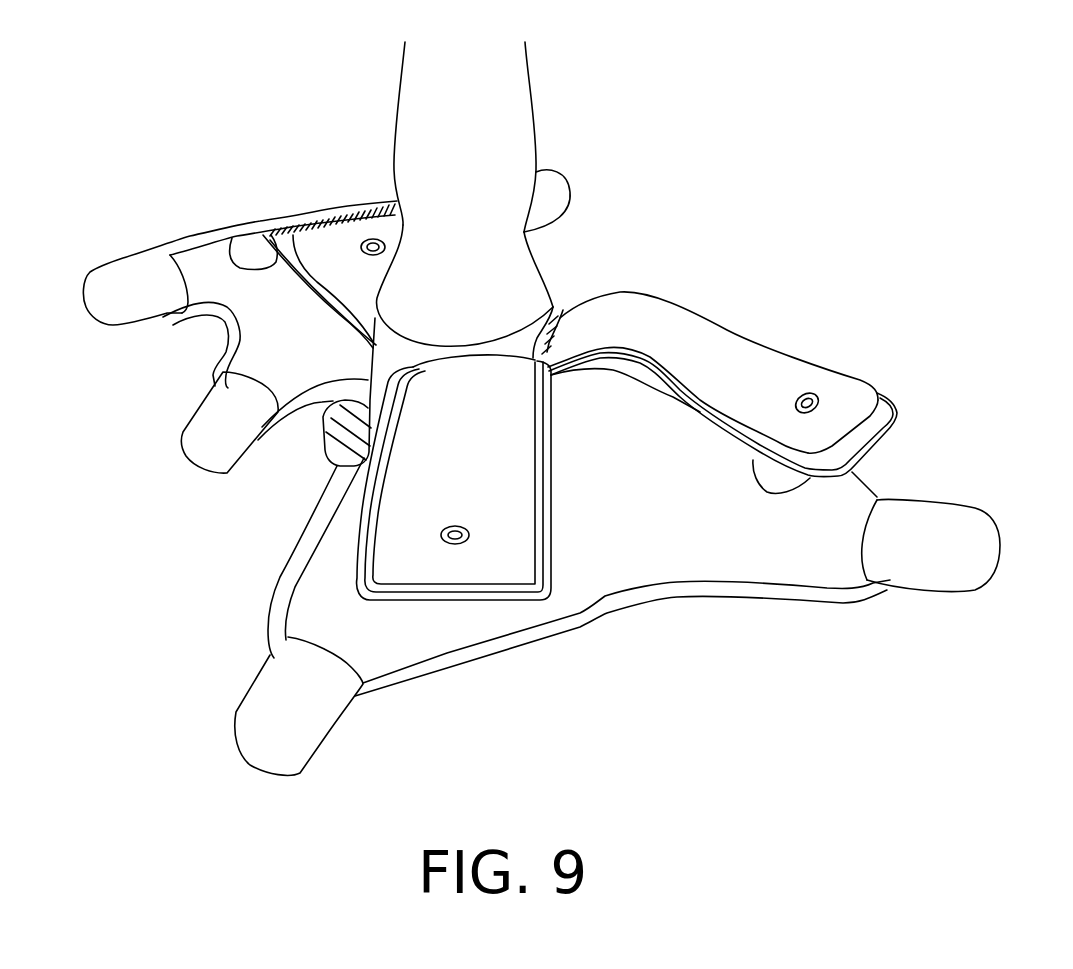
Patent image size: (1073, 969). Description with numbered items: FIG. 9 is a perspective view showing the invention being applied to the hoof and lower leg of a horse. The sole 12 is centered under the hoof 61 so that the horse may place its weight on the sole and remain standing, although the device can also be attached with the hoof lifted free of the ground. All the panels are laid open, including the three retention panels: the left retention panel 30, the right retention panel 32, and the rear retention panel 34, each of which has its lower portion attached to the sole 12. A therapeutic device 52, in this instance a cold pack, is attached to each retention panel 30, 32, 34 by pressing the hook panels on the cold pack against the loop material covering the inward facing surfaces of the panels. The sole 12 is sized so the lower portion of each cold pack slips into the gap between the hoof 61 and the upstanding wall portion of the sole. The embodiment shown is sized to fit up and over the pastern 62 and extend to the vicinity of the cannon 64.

The sole 12 is at (336, 460).
The left retention panel 30 is at (897, 410).
The right retention panel 32 is at (467, 601).
The rear retention panel 34 is at (260, 223).
The therapeutic device 52 is at (342, 247).
The hoof 61 is at (390, 353).
The pastern 62 is at (515, 297).
The cannon 64 is at (472, 122).